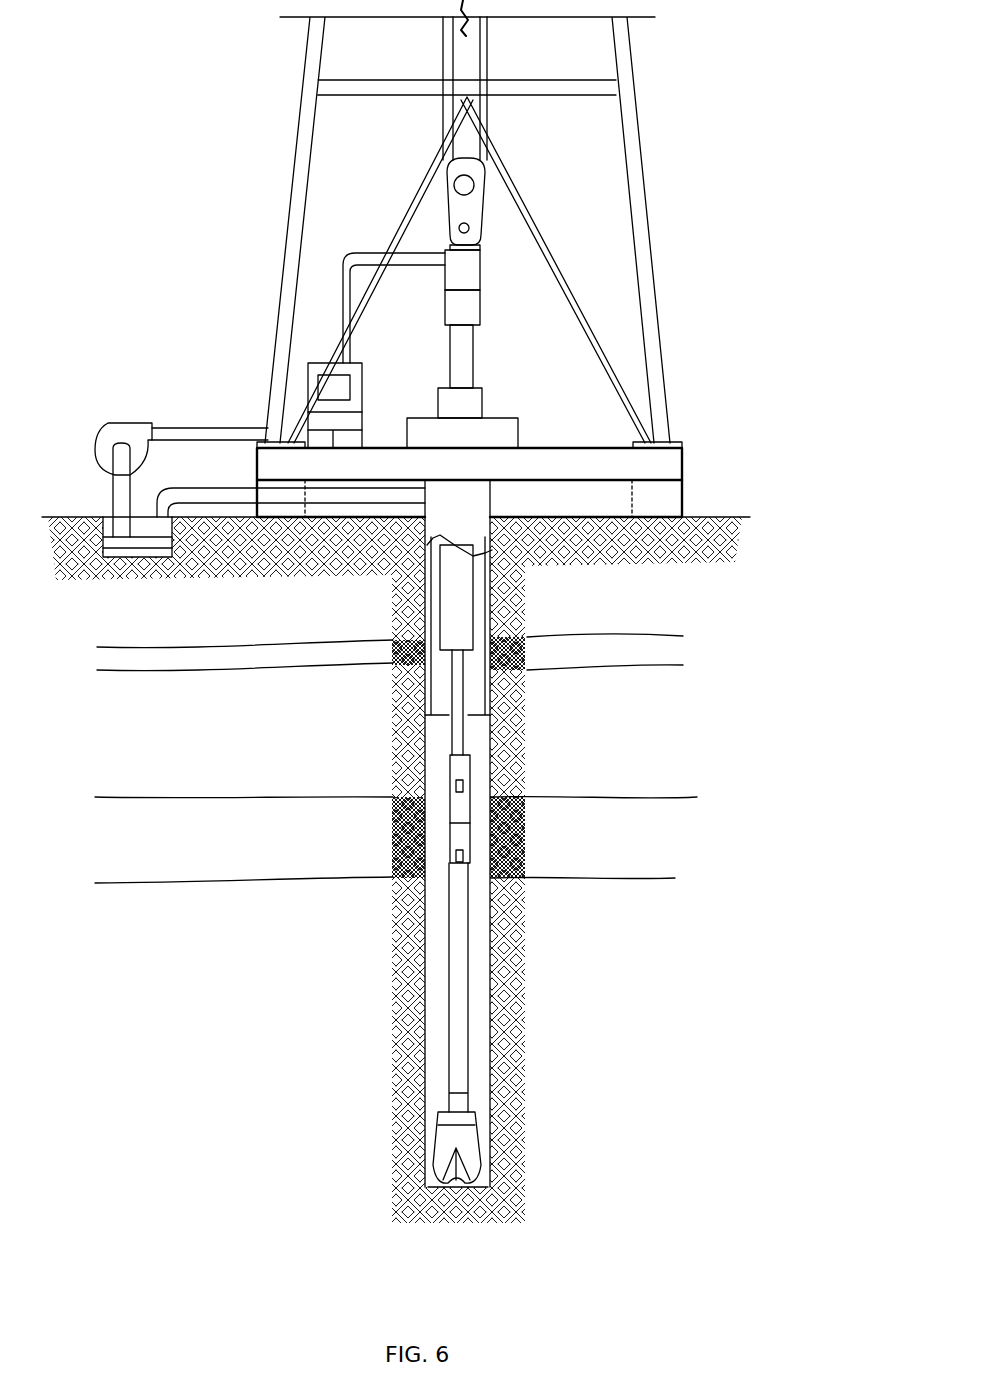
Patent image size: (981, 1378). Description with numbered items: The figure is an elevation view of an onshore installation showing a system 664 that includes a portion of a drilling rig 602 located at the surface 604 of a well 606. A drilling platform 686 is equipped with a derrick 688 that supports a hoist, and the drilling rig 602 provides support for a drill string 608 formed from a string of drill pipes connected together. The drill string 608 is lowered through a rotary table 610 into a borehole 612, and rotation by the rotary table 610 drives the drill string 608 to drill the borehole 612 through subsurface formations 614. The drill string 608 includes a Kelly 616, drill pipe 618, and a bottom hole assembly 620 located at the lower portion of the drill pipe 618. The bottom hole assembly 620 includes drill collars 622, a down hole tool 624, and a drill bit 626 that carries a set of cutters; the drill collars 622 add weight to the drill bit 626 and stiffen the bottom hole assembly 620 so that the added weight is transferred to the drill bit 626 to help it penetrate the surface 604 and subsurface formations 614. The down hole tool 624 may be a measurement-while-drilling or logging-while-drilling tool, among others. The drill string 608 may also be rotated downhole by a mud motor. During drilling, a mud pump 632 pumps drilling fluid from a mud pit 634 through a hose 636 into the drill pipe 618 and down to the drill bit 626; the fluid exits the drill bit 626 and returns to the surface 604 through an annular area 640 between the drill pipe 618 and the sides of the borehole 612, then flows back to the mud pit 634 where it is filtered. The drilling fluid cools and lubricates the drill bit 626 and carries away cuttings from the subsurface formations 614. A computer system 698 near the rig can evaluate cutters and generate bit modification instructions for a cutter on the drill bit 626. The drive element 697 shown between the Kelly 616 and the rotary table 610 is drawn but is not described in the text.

The system 664 is at (213, 157).
The derrick 688 is at (637, 120).
The drilling rig 602 is at (654, 246).
The computer system 698 is at (308, 372).
The Kelly 616 is at (477, 348).
The rotary drive 697 is at (483, 403).
The rotary table 610 is at (521, 434).
The drilling platform 686 is at (684, 450).
The mud pump 632 is at (128, 422).
The hose 636 is at (233, 427).
The surface 604 is at (736, 517).
The well 606 is at (501, 514).
The mud pit 634 is at (122, 557).
The drill collars 622 is at (477, 603).
The drill pipe 618 is at (458, 688).
The subsurface formations 614 is at (83, 647).
The annular area 640 is at (478, 760).
The bottom hole assembly 620 is at (385, 710).
The drill string 608 is at (474, 927).
The borehole 612 is at (480, 1025).
The down hole tool 624 is at (455, 1058).
The drill bit 626 is at (467, 1135).